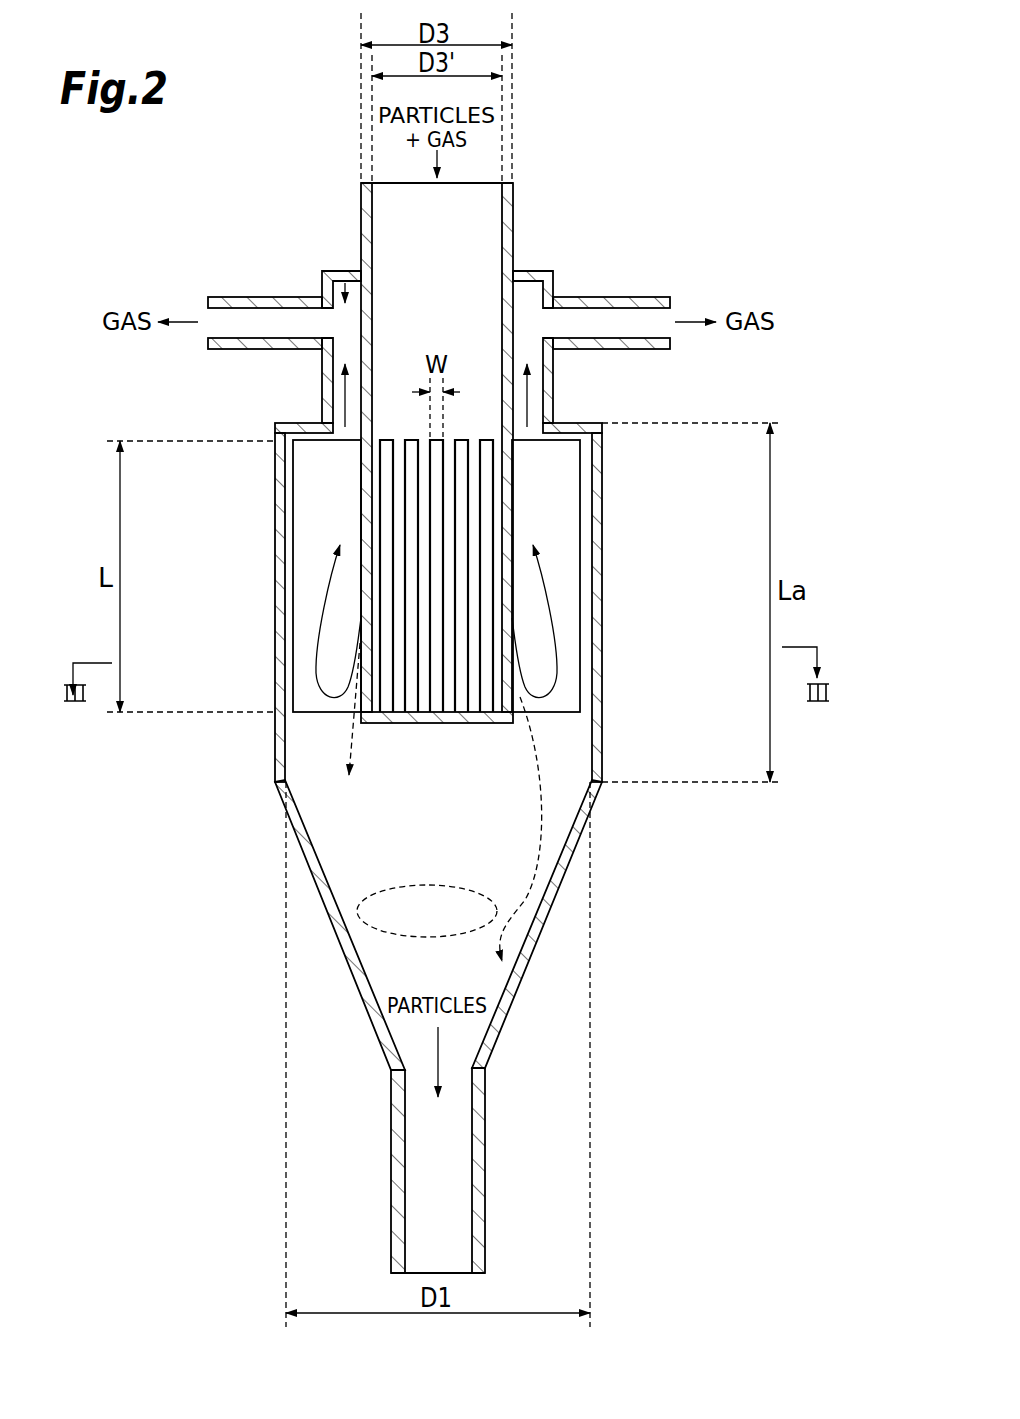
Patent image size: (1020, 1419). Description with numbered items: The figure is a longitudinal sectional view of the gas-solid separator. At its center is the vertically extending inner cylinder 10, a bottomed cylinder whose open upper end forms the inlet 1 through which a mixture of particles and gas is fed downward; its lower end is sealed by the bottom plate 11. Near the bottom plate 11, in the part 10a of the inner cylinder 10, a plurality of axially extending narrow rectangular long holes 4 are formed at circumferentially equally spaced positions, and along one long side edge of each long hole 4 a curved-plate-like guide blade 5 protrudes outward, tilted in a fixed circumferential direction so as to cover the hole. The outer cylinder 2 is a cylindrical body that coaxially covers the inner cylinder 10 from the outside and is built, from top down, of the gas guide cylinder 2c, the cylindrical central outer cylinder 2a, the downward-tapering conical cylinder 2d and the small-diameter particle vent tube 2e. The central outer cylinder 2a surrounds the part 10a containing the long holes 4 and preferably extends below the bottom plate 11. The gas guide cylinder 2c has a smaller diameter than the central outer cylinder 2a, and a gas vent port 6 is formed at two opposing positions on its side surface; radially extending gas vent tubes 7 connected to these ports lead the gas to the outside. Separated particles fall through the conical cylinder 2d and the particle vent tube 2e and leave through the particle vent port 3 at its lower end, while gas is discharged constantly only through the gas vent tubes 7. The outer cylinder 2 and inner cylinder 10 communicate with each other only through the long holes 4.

The inlet 1 is at (476, 204).
The outer cylinder 2 is at (727, 457).
The central outer cylinder 2a is at (603, 547).
The gas guide cylinder 2c is at (553, 370).
The conical cylinder 2d is at (580, 840).
The particle vent tube 2e is at (485, 1118).
The particle vent port 3 is at (496, 1284).
The long hole 4 is at (550, 422).
The guide blade 5 is at (560, 507).
The gas vent port 6 is at (343, 287).
The gas vent tube 7 is at (632, 297).
The inner cylinder 10 is at (513, 243).
The part in which the long holes are formed 10a is at (200, 441).
The bottom plate 11 is at (443, 723).